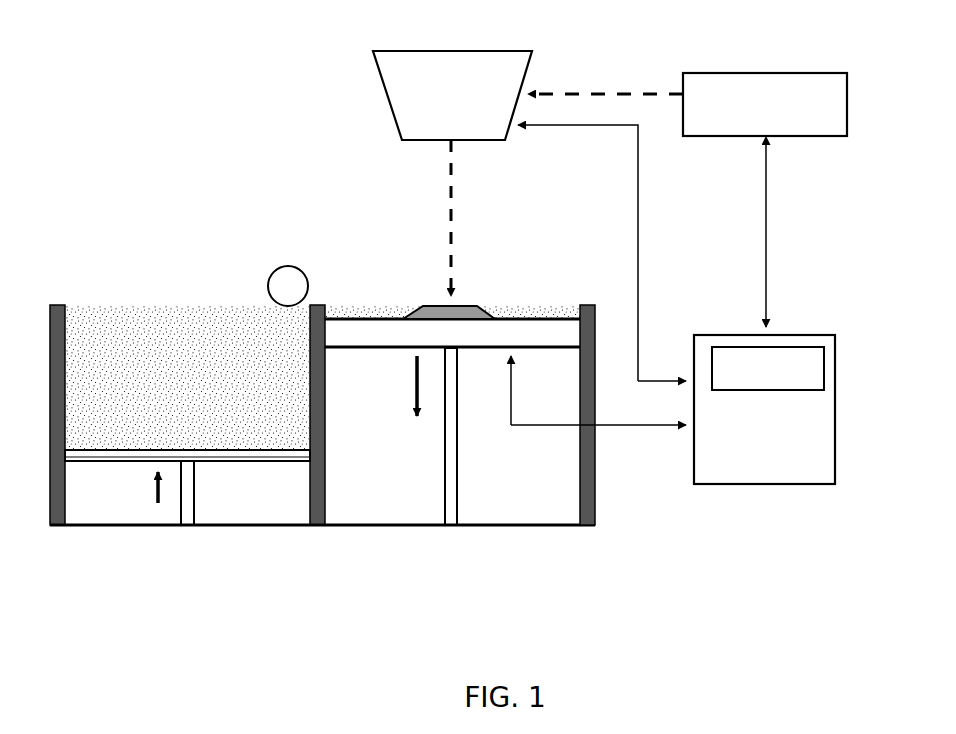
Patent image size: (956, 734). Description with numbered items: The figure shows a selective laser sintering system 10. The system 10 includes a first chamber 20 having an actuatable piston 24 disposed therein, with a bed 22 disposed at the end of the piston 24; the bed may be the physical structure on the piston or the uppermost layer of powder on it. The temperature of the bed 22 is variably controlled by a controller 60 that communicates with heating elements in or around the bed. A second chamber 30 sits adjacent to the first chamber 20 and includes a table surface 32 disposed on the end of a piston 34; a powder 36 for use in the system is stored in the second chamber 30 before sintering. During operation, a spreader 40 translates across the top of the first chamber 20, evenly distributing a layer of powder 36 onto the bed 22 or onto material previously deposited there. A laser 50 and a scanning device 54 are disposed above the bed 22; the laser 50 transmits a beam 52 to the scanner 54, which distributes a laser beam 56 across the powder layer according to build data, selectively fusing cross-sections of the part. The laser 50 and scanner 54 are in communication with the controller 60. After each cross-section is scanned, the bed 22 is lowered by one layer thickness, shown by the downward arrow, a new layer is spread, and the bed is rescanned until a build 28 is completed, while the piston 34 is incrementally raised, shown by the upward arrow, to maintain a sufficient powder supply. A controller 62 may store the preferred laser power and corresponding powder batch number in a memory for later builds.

The selective laser sintering system 10 is at (247, 88).
The first chamber 20 is at (385, 495).
The bed 22 is at (355, 335).
The piston 24 is at (457, 500).
The build 28 is at (430, 307).
The second chamber 30 is at (113, 507).
The table surface 32 is at (258, 455).
The piston 34 is at (194, 495).
The powder 36 is at (112, 318).
The spreader 40 is at (271, 272).
The laser 50 is at (819, 73).
The beam 52 is at (578, 92).
The scanning device 54 is at (458, 47).
The laser beam 56 is at (453, 228).
The controller 60 is at (803, 334).
The controller 62 is at (804, 381).